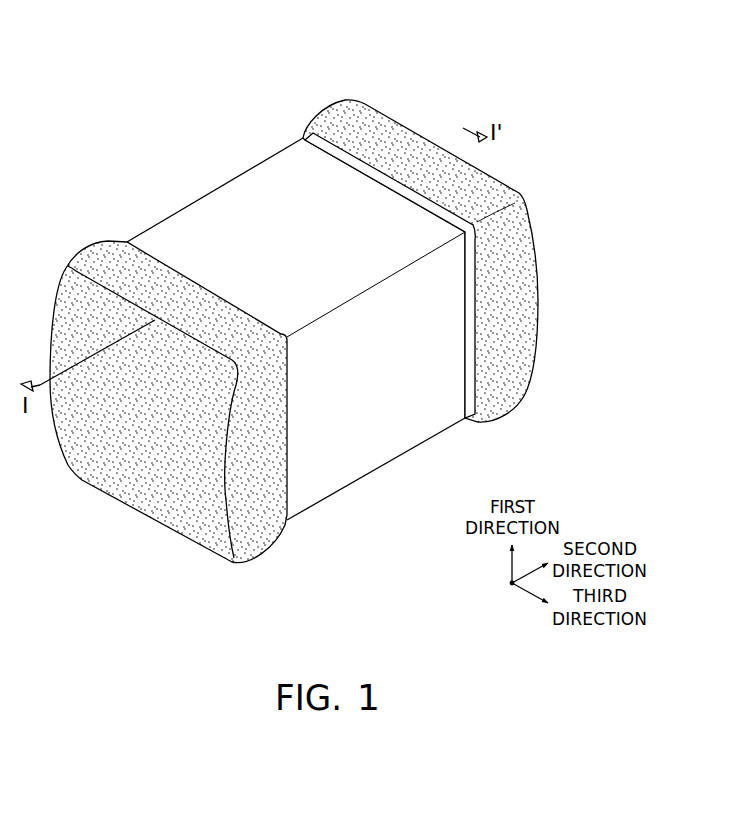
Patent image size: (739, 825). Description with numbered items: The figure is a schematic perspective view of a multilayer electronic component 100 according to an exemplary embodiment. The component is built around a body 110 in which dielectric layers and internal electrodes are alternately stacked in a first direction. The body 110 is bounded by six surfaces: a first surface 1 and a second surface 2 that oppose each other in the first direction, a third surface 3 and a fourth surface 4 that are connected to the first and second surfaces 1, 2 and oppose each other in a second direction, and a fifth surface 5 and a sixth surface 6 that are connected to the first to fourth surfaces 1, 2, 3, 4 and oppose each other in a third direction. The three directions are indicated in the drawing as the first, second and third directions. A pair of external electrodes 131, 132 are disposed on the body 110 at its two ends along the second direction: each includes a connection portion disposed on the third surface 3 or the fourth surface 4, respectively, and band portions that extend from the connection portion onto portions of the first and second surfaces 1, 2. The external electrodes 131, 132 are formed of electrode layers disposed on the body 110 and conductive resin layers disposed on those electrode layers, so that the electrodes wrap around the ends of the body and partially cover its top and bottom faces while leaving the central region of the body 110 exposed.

The multilayer electronic component 100 is at (133, 53).
The body 110 is at (238, 190).
The external electrode 131 is at (97, 257).
The external electrode 132 is at (338, 113).
The first surface 1 is at (332, 488).
The second surface 2 is at (283, 178).
The third surface 3 is at (137, 473).
The fourth surface 4 is at (397, 127).
The fifth surface 5 is at (390, 437).
The sixth surface 6 is at (167, 219).